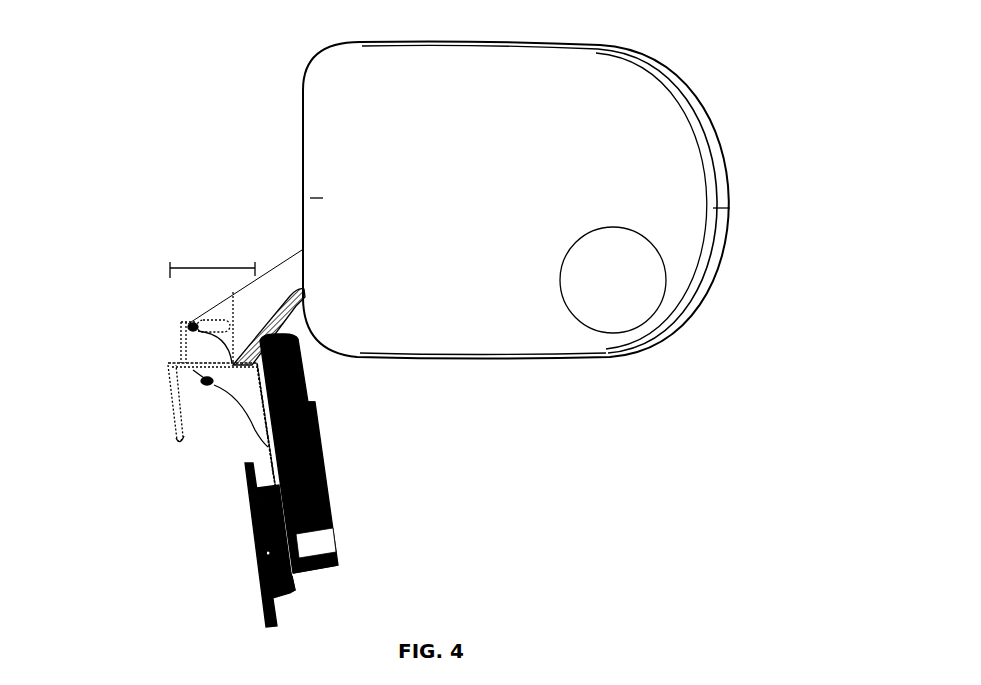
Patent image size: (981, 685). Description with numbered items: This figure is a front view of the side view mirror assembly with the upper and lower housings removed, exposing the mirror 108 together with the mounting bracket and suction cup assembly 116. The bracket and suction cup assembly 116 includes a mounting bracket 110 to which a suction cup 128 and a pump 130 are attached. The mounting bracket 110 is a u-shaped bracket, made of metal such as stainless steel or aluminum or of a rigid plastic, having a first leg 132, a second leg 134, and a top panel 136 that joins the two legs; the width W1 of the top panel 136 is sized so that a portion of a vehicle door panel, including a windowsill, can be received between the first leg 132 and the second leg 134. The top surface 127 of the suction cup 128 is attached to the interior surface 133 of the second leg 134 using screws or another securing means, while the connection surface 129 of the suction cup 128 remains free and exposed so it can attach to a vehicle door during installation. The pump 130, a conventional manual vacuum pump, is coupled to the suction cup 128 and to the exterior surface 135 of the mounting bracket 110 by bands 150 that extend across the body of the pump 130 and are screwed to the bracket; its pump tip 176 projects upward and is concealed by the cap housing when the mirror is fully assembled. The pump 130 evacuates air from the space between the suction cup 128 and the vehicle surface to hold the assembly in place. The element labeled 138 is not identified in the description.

The mirror 108 is at (663, 199).
The width of top panel W1 is at (218, 268).
The mounting bracket 110 is at (170, 402).
The bracket and suction cup assembly 116 is at (160, 505).
The top panel 136 is at (192, 325).
The first leg 132 is at (170, 393).
The flange end 138 is at (176, 440).
The interior surface 133 is at (272, 464).
The pump tip 176 is at (303, 380).
The pump 130 is at (327, 485).
The bands 150 is at (315, 420).
The exterior surface 135 is at (338, 563).
The second leg 134 is at (296, 577).
The top surface 127 is at (293, 578).
The suction cup 128 is at (263, 546).
The connection surface 129 is at (268, 627).